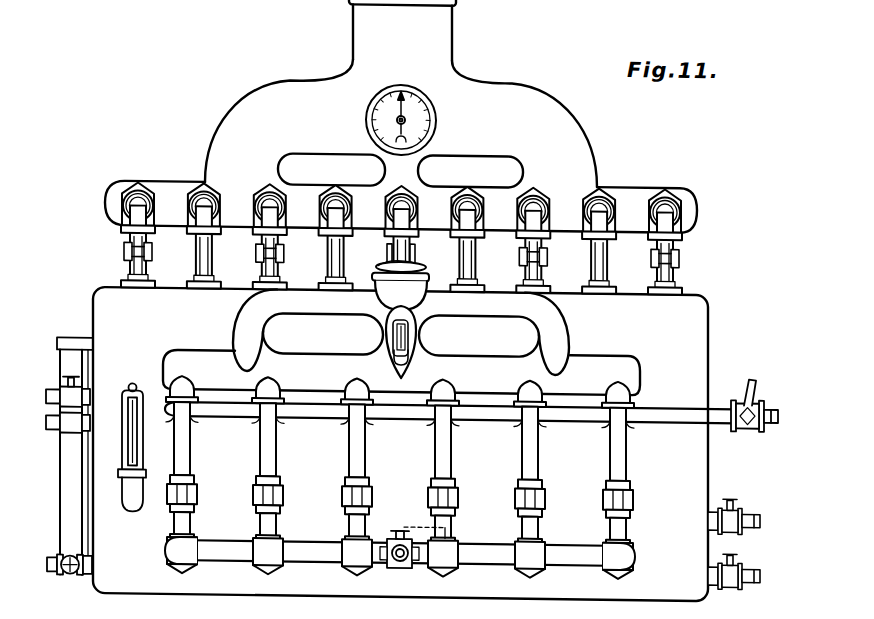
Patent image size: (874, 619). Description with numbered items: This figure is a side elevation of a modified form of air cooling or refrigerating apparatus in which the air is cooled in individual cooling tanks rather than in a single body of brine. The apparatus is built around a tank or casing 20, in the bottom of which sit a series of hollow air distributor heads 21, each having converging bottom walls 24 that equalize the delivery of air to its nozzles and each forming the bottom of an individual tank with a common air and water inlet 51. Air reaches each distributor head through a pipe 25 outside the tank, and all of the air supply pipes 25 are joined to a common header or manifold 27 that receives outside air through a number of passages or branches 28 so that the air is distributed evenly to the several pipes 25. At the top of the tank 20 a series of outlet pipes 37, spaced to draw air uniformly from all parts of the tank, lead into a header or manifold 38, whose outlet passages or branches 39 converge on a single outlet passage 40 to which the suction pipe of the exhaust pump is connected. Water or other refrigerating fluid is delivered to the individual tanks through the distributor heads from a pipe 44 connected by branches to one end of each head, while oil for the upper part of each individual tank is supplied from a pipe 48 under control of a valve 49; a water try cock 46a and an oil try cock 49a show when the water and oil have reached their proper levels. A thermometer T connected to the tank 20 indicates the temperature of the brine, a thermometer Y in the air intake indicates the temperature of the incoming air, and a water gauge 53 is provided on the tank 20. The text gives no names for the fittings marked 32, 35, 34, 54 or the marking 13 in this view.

The tank or casing 20 is at (693, 314).
The outlet passage 40 is at (437, 17).
The outlet passages or branches 39 is at (396, 171).
The header or manifold 38 is at (160, 193).
The outlet pipes 37 is at (262, 267).
The passages or branches 28 is at (247, 323).
The header or manifold 27 is at (197, 365).
The thermometer Y is at (392, 337).
The pipe 48 is at (407, 416).
The pipe 44 is at (310, 551).
The pipe 25 is at (349, 461).
The thermometer T is at (126, 424).
The valve 49 is at (752, 427).
The outlet valve 32 is at (744, 506).
The drain valve 35 is at (728, 586).
The water gauge 53 is at (68, 525).
The oil try cock 49a is at (45, 402).
The water try cock 46a is at (68, 437).
The pipe union 34 is at (62, 581).
The section line 13 is at (53, 378).
The common air and water inlet 51 is at (217, 7).
The bottom walls 24 is at (308, 8).
The fitting 54 is at (517, 6).
The hollow air distributor heads 21 is at (554, 7).